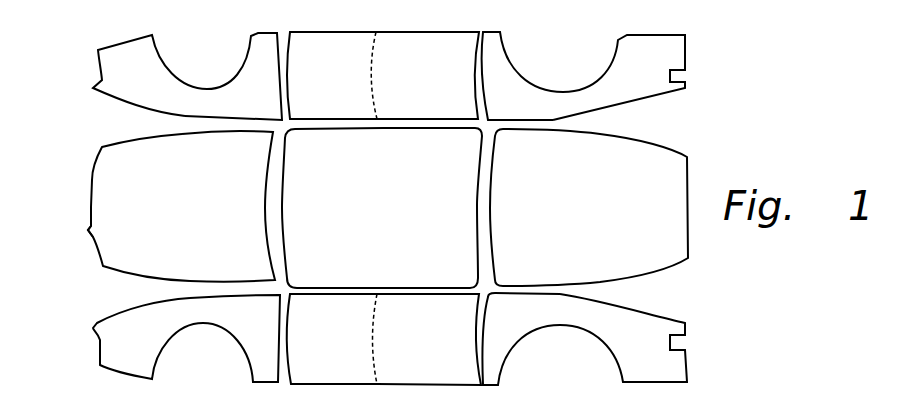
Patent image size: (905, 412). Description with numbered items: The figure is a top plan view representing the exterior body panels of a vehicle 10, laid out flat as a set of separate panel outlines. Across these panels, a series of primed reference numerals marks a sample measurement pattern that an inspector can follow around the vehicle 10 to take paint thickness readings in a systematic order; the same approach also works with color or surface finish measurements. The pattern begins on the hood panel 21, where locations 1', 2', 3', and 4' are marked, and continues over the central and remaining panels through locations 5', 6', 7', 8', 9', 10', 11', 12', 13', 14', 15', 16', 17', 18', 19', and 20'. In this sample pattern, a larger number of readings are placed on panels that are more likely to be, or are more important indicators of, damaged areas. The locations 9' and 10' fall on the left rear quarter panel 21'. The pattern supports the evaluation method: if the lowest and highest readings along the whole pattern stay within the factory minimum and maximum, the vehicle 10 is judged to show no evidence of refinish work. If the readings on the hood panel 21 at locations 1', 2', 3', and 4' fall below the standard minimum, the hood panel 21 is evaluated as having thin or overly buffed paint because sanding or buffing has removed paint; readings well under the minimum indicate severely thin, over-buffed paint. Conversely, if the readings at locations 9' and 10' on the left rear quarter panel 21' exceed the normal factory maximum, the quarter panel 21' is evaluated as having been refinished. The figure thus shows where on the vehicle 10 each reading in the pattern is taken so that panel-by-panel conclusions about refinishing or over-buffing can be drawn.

The vehicle 10 is at (808, 89).
The measurement location 1' is at (227, 169).
The measurement location 2' is at (136, 170).
The measurement location 3' is at (139, 244).
The measurement location 4' is at (232, 245).
The measurement location 5' is at (332, 208).
The measurement location 6' is at (432, 208).
The measurement location 7' is at (589, 247).
The measurement location 8' is at (589, 168).
The measurement location 9' is at (619, 77).
The measurement location 10' is at (522, 76).
The measurement location 11' is at (427, 75).
The measurement location 12' is at (332, 75).
The measurement location 13' is at (233, 76).
The measurement location 14' is at (150, 75).
The measurement location 15' is at (148, 338).
The measurement location 16' is at (235, 338).
The measurement location 17' is at (332, 339).
The measurement location 18' is at (429, 339).
The measurement location 19' is at (521, 339).
The measurement location 20' is at (623, 338).
The hood panel 21 is at (55, 233).
The left rear quarter panel 21' is at (718, 54).